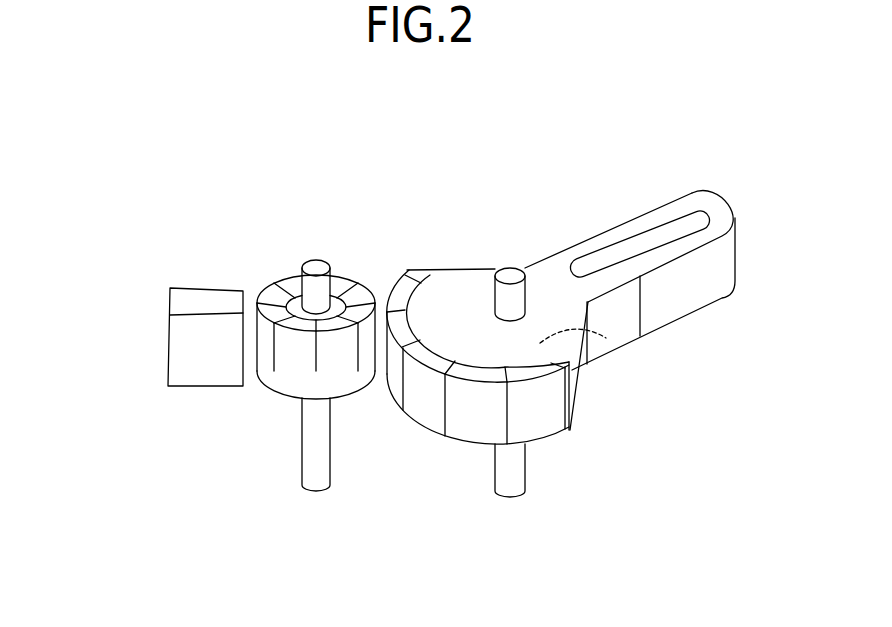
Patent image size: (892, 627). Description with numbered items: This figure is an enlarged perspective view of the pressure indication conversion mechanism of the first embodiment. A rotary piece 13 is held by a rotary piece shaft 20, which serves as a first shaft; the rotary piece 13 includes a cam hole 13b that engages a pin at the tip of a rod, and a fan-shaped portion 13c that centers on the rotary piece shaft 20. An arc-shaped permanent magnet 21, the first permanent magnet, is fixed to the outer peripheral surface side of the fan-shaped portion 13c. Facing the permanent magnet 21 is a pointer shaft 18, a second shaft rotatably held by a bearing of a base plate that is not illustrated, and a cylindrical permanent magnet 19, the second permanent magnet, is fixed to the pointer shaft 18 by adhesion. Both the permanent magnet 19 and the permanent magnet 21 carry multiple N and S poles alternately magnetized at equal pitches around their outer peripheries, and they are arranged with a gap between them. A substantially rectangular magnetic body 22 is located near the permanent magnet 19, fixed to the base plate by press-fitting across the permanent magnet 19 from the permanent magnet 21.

The rotary piece 13 is at (592, 291).
The cam hole 13b is at (643, 242).
The fan-shaped portion 13c is at (583, 333).
The pointer shaft 18 is at (317, 267).
The cylindrical permanent magnet 19 is at (276, 394).
The rotary piece shaft 20 is at (509, 274).
The arc-shaped permanent magnet 21 is at (552, 425).
The magnetic body 22 is at (193, 352).